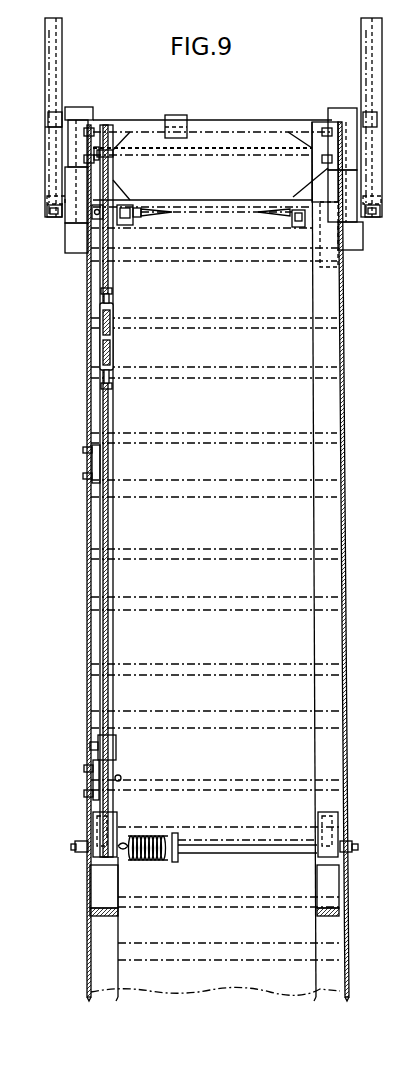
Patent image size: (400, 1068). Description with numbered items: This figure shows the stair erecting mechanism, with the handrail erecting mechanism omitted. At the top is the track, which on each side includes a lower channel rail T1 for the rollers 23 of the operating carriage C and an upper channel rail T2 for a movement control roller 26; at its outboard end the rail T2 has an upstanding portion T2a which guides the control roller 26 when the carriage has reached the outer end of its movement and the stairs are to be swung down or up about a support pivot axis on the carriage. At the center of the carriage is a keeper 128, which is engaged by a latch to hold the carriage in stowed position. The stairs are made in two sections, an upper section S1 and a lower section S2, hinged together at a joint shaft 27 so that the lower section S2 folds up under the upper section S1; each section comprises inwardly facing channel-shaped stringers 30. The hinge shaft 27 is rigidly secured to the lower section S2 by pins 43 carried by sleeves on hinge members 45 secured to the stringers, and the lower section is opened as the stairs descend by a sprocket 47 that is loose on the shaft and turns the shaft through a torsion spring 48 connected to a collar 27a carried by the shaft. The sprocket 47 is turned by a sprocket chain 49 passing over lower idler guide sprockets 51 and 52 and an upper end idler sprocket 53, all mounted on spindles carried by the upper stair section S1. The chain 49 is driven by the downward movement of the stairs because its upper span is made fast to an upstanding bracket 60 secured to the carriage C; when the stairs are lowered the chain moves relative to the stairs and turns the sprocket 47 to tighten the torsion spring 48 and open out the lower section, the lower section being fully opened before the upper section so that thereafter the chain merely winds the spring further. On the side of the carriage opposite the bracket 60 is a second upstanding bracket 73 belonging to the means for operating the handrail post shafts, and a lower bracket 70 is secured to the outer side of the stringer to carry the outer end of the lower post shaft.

The upper channel rail T2 is at (45, 47).
The upstanding portion T2a is at (48, 116).
The movement control roller 26 is at (46, 127).
The rollers 23 is at (48, 201).
The lower channel rail T1 is at (50, 218).
The operating carriage C is at (237, 120).
The keeper 128 is at (174, 115).
The upper end idler sprocket 53 is at (113, 160).
The upstanding bracket 60 is at (130, 224).
The upstanding bracket 73 is at (298, 227).
The stringers 30 is at (97, 545).
The sprocket chain 49 is at (103, 590).
The upper stair section S1 is at (87, 665).
The lower idler guide sprocket 51 is at (116, 748).
The lower idler guide sprocket 52 is at (121, 790).
The lower bracket 70 is at (93, 817).
The pins 43 is at (82, 853).
The hinge members 45 is at (340, 881).
The lower stair section S2 is at (87, 966).
The sprocket 47 is at (120, 858).
The torsion spring 48 is at (150, 861).
The collar 27a is at (180, 836).
The joint shaft 27 is at (243, 855).